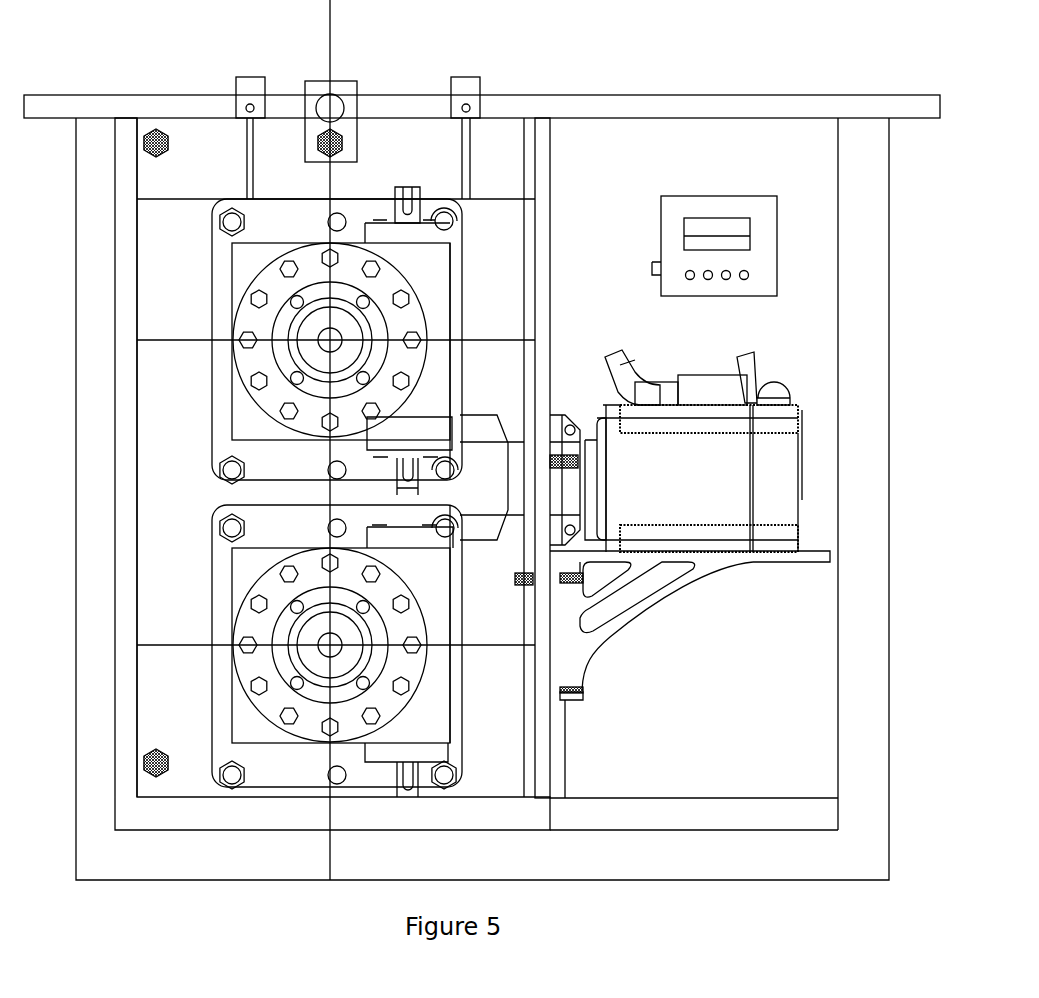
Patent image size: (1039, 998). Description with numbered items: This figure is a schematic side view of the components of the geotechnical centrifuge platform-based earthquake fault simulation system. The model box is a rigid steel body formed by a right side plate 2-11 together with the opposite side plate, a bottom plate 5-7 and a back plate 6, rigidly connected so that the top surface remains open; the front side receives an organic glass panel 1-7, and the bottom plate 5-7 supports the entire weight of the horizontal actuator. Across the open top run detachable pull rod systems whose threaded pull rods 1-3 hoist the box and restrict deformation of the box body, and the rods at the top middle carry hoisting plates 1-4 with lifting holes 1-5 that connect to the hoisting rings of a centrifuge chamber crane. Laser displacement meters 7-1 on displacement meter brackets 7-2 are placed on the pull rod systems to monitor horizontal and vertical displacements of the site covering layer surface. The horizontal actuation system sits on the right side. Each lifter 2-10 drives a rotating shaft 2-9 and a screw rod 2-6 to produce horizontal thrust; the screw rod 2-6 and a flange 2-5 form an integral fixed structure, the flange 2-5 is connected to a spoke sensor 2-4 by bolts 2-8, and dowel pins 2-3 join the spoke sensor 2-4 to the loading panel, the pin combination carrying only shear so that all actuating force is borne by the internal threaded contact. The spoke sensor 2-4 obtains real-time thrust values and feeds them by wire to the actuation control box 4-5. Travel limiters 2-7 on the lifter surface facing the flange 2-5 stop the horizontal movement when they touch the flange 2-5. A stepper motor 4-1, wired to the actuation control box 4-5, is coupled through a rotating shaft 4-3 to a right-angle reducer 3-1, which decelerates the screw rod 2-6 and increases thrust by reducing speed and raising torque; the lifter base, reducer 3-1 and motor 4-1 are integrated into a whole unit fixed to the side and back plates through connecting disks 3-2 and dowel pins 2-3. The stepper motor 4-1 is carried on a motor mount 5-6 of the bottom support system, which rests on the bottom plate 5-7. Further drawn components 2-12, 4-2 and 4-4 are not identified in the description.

The displacement meter bracket 7-2 is at (218, 103).
The laser displacement meter 7-1 is at (250, 108).
The threaded pull rod 1-3 is at (308, 474).
The organic glass panel 1-7 is at (157, 457).
The hoisting plate 1-4 is at (359, 134).
The lifting hole 1-5 is at (322, 157).
The right side plate 2-11 is at (235, 183).
The housing 2-12 is at (430, 278).
The rotating shaft 2-9 is at (410, 192).
The flange 2-5 is at (268, 282).
The travel limiter 2-7 is at (258, 385).
The screw rod 2-6 is at (312, 332).
The spoke sensor 2-4 is at (290, 342).
The dowel pin 2-3 is at (300, 384).
The lifter 2-10 is at (215, 467).
The bolt 2-8 is at (225, 487).
The right-angle reducer 3-1 is at (484, 455).
The connecting disk 3-2 is at (552, 372).
The back plate 6 is at (552, 733).
The stepper motor 4-1 is at (733, 447).
The cable elbow 4-4 is at (608, 365).
The seal 4-2 is at (578, 462).
The rotating shaft 4-3 is at (578, 478).
The actuation control box 4-5 is at (705, 203).
The motor mount 5-6 is at (580, 653).
The bottom plate 5-7 is at (561, 817).